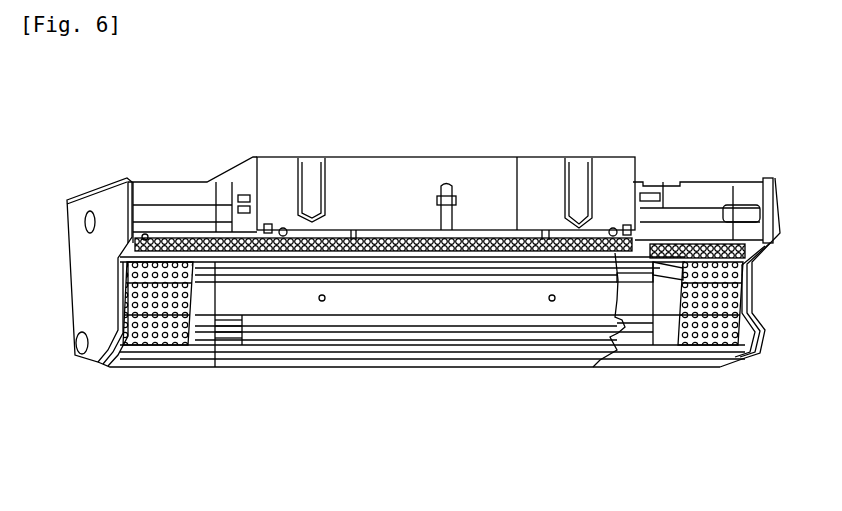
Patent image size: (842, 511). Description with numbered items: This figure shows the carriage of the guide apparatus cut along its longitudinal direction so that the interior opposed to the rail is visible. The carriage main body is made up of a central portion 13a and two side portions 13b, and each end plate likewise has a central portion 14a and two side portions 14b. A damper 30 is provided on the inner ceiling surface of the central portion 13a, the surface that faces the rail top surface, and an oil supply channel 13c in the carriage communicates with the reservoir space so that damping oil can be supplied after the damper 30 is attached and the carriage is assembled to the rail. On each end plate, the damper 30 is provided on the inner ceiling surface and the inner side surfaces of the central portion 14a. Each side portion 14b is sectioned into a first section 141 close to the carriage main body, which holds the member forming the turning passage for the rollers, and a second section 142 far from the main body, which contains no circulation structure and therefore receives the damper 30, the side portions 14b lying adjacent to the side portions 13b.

The central portion 13a is at (408, 183).
The side portion 13b is at (400, 335).
The oil supply channel 13c is at (443, 183).
The central portion 14a is at (180, 187).
The side portion 14b is at (433, 376).
The first section 141 is at (216, 345).
The second section 142 is at (238, 442).
The damper 30 is at (216, 185).